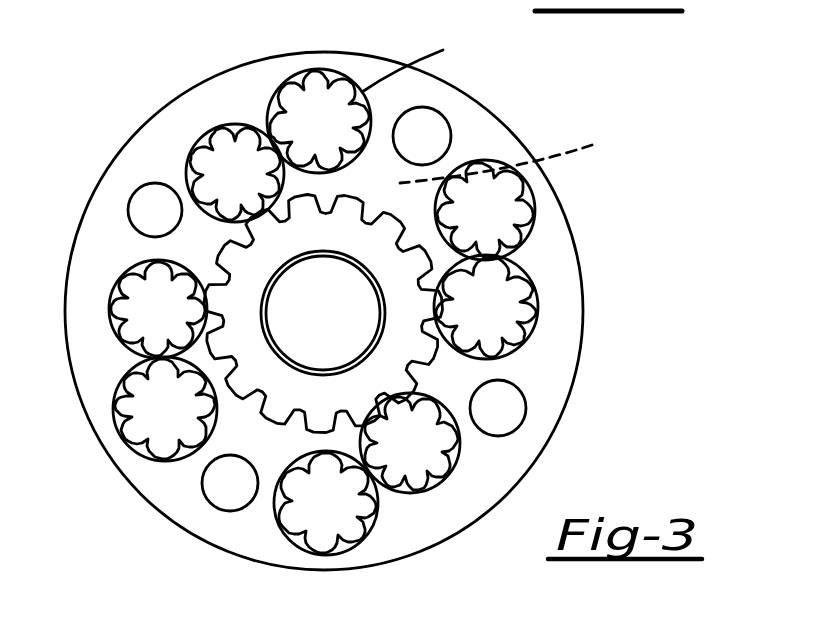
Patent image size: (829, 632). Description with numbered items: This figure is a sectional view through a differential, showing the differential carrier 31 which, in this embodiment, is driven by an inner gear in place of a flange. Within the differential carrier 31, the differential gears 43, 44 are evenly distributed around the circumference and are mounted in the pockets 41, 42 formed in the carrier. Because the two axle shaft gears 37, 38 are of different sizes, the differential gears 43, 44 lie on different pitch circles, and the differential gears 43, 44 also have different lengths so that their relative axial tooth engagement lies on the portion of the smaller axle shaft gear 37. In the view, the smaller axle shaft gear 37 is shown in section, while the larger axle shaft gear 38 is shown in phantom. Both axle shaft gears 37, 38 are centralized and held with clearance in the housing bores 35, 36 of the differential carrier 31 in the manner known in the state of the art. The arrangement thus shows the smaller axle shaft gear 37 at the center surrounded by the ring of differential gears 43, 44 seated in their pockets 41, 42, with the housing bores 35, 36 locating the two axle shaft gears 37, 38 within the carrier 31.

The differential carrier 31 is at (518, 138).
The housing bore 35 is at (433, 337).
The housing bore 36 is at (432, 388).
The axle shaft gear 37 is at (397, 280).
The axle shaft gear 38 is at (513, 155).
The pocket 41 is at (212, 132).
The pocket 42 is at (414, 57).
The differential gear 43 is at (247, 163).
The differential gear 44 is at (332, 92).